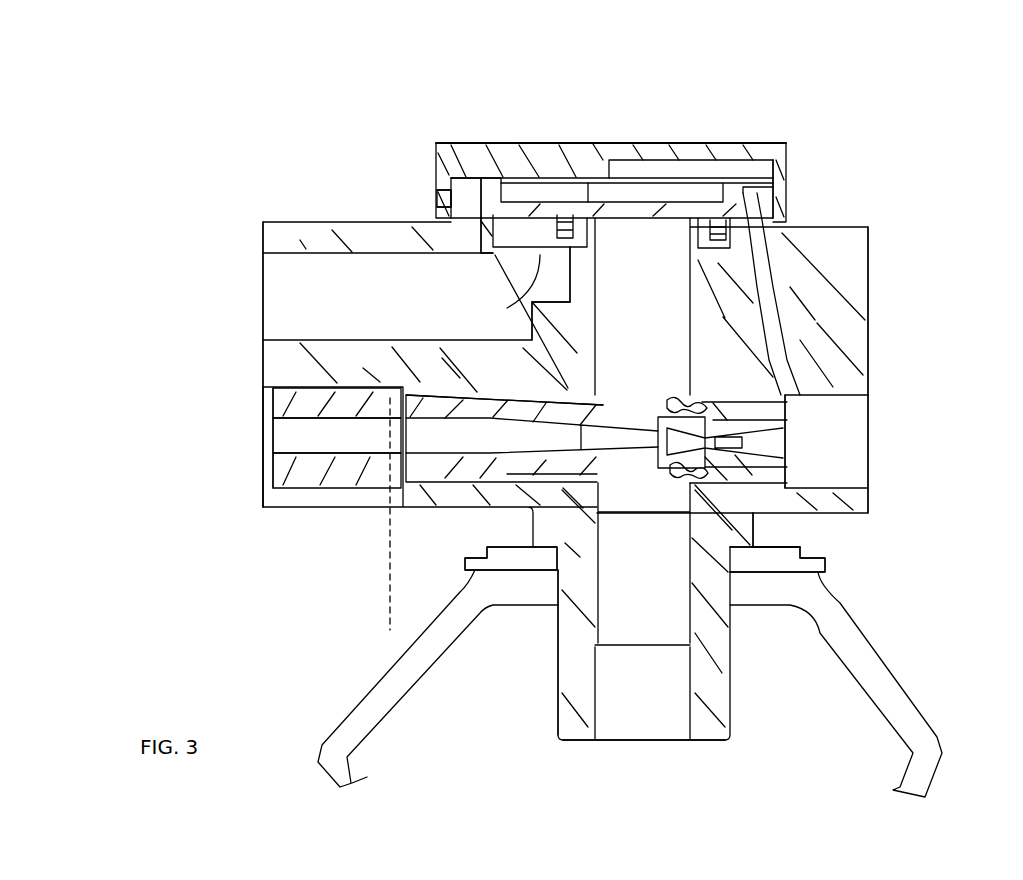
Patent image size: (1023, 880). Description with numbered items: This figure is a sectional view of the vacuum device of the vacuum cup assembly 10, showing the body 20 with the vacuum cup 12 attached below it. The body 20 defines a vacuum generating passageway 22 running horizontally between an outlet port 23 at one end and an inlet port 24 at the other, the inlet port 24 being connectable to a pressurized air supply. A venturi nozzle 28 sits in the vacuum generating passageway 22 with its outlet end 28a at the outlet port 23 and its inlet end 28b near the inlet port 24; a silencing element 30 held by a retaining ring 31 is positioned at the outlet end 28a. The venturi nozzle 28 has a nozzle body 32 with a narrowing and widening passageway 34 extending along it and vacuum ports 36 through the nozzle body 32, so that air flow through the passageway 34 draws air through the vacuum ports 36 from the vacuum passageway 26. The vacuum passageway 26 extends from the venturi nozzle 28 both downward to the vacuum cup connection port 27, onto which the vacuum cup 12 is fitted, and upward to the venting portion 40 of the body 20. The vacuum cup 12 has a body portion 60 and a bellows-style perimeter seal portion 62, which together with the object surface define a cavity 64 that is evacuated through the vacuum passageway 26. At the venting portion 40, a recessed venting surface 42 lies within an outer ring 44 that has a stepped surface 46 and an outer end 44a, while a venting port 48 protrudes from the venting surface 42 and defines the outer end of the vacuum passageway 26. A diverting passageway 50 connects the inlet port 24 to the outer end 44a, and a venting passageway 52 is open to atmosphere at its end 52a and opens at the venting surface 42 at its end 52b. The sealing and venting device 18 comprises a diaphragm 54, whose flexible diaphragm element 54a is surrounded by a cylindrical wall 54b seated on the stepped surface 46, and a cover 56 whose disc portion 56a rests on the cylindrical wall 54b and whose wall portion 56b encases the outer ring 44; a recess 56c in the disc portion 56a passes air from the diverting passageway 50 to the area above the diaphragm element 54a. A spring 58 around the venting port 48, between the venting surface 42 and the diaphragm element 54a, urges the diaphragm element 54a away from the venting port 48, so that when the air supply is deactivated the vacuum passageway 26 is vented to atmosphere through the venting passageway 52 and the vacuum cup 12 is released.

The vacuum cup assembly 10 is at (966, 178).
The vacuum cup 12 is at (935, 617).
The sealing and venting device 18 is at (608, 98).
The body 20 is at (899, 268).
The vacuum generating passageway 22 is at (857, 450).
The outlet port 23 is at (262, 422).
The inlet port 24 is at (848, 418).
The vacuum passageway 26 is at (670, 343).
The vacuum cup connection port 27 is at (553, 647).
The venturi nozzle 28 is at (457, 547).
The outlet end 28a is at (441, 385).
The inlet end 28b is at (793, 507).
The silencing element 30 is at (337, 473).
The retaining ring 31 is at (300, 437).
The nozzle body 32 is at (433, 473).
The passageway 34 is at (277, 450).
The vacuum port 36 is at (677, 405).
The venting portion 40 is at (437, 192).
The venting surface 42 is at (527, 255).
The outer ring 44 is at (454, 203).
The outer end 44a is at (763, 143).
The stepped surface 46 is at (470, 233).
The venting port 48 is at (600, 225).
The diverting passageway 50 is at (765, 285).
The venting passageway 52 is at (335, 285).
The atmosphere end 52a is at (277, 297).
The venting surface end 52b is at (526, 321).
The diaphragm 54 is at (546, 190).
The diaphragm element 54a is at (595, 160).
The cylindrical wall 54b is at (486, 200).
The cover 56 is at (787, 143).
The disc portion 56a is at (660, 140).
The wall portion 56b is at (790, 212).
The recess 56c is at (703, 153).
The spring 58 is at (716, 248).
The body portion 60 is at (522, 585).
The perimeter seal portion 62 is at (375, 707).
The cavity 64 is at (822, 717).